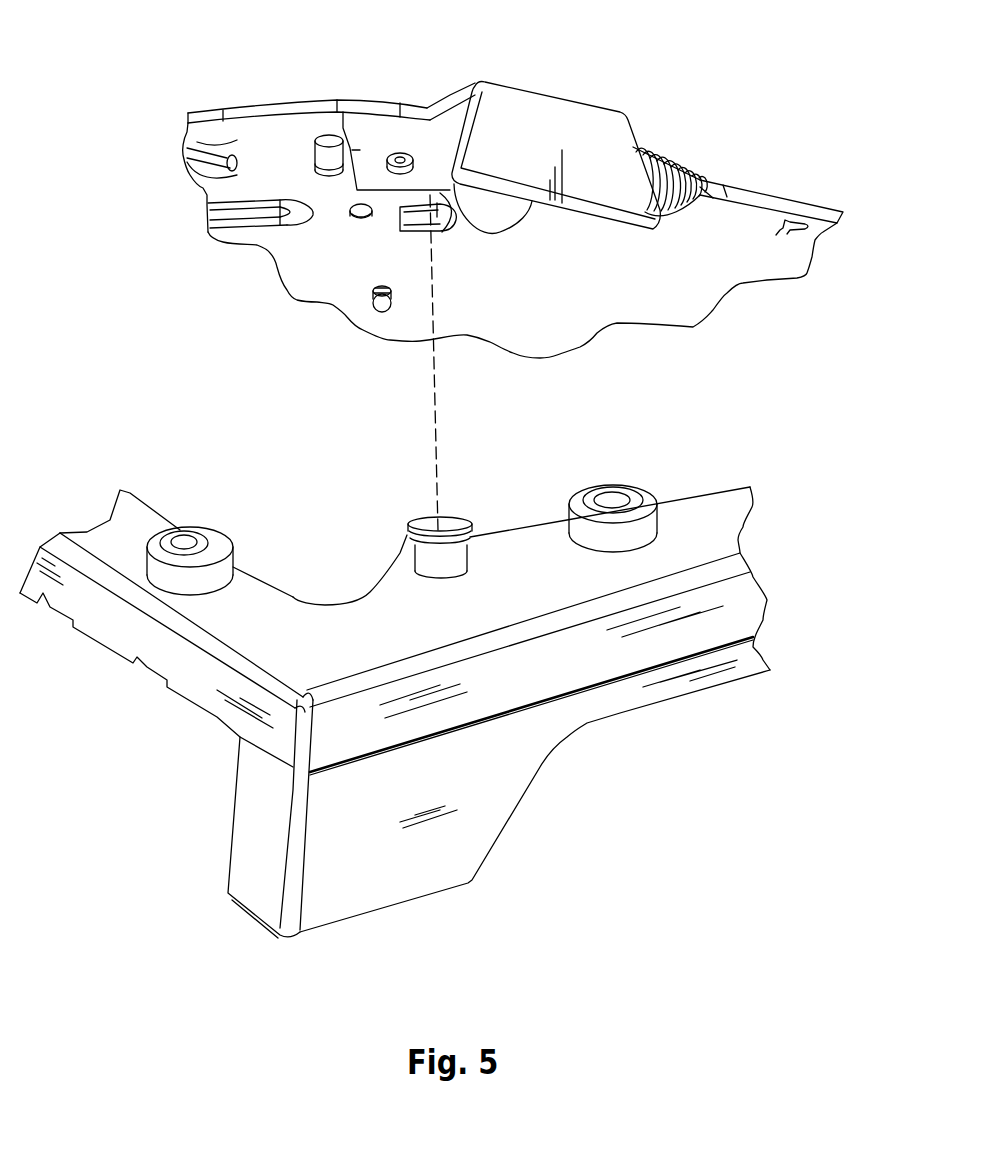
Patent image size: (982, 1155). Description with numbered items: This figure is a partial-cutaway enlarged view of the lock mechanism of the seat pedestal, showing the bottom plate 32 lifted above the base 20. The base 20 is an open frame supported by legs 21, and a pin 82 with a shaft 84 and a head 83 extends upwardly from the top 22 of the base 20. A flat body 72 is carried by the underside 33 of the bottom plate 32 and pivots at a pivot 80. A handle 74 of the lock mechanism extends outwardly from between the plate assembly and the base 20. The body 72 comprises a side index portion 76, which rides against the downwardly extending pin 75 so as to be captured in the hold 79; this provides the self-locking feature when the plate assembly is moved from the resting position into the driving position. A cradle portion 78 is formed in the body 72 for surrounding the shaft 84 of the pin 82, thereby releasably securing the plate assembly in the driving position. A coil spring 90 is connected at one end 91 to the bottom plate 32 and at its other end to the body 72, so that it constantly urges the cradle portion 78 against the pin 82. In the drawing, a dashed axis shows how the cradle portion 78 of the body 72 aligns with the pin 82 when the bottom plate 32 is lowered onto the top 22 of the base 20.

The base 20 is at (743, 578).
The legs 21 is at (233, 813).
The top of the base 22 is at (143, 525).
The bottom plate 32 is at (687, 330).
The underside of the bottom plate 33 is at (188, 133).
The flat body 72 is at (520, 225).
The handle 74 is at (633, 127).
The downwardly extending pin 75 is at (313, 152).
The side index portion 76 is at (350, 127).
The cradle portion 78 is at (450, 222).
The hold 79 is at (323, 137).
The pivot 80 is at (413, 153).
The pin 82 is at (483, 552).
The head 83 is at (453, 522).
The shaft 84 is at (400, 552).
The coil spring 90 is at (683, 158).
The one end of the coil spring 91 is at (790, 233).